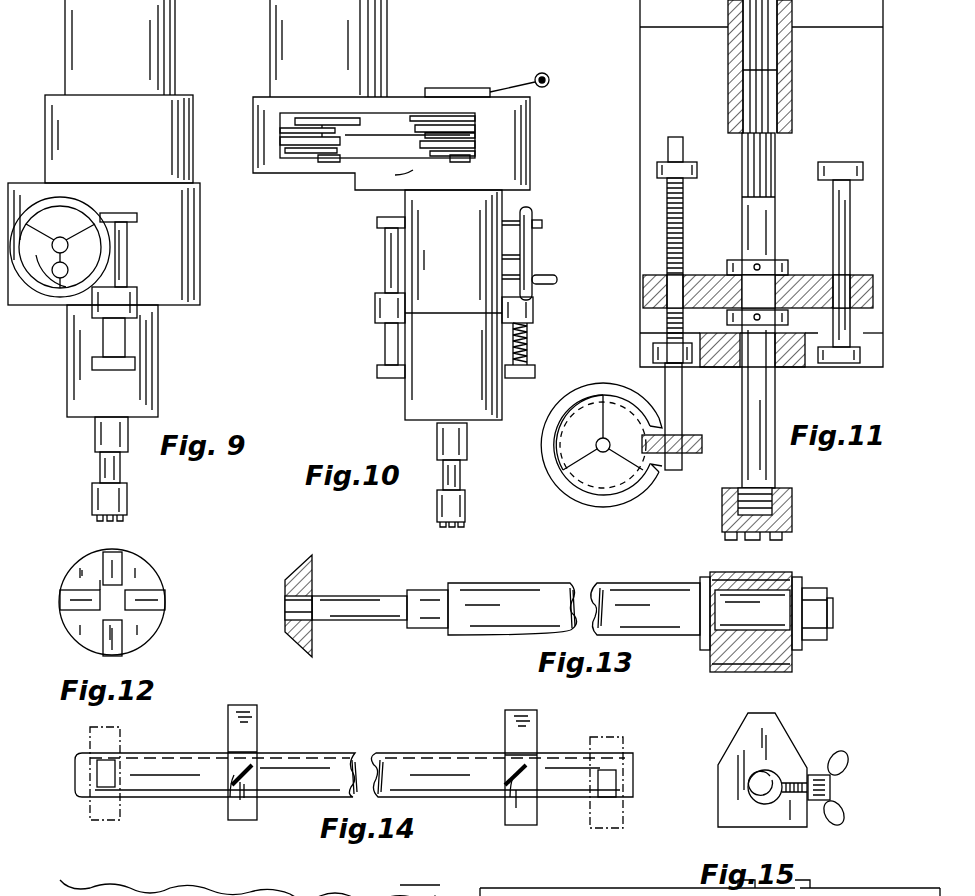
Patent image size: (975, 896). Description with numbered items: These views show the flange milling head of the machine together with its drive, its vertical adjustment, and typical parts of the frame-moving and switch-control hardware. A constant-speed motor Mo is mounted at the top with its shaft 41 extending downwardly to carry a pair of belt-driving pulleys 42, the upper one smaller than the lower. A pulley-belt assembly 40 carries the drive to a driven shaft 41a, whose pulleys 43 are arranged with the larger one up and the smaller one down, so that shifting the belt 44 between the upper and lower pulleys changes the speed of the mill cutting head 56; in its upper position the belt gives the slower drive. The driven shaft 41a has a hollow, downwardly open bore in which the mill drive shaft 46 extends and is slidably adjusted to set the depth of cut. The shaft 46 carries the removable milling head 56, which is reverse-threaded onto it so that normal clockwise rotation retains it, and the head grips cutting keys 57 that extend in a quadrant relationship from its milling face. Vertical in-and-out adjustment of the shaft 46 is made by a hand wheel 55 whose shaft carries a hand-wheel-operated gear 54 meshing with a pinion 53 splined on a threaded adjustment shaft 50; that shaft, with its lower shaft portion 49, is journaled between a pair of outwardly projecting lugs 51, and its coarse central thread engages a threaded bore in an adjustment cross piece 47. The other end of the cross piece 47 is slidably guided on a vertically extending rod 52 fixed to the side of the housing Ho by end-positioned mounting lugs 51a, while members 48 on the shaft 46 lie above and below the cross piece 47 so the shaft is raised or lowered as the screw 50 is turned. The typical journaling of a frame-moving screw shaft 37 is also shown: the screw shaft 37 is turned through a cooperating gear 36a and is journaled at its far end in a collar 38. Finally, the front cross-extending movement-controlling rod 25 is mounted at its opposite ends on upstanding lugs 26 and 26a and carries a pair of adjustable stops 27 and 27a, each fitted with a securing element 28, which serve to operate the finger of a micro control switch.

In FIG. 9, the milling head motor Mo is at (175, 50).
In FIG. 10, the milling head motor Mo is at (387, 49).
In FIG. 9, the housing Ho is at (200, 237).
In FIG. 10, the housing Ho is at (530, 175).
In FIG. 14, the movement-controlling rod 25 is at (416, 751).
In FIG. 15, the movement-controlling rod 25 is at (744, 782).
In FIG. 14, the upstanding ear or lug 26 is at (112, 816).
In FIG. 14, the upstanding ear or lug 26a is at (631, 842).
In FIG. 14, the adjustable stop 27 is at (255, 733).
In FIG. 14, the adjustable stop 27a is at (505, 726).
In FIG. 15, the adjustable stop 27a is at (790, 728).
In FIG. 14, the set screw / wing nut 28 is at (232, 786).
In FIG. 15, the set screw / wing nut 28 is at (840, 770).
In FIG. 13, the cooperating gear 36a is at (315, 575).
In FIG. 13, the screw shaft 37 is at (521, 588).
In FIG. 13, the collar 38 is at (720, 572).
In FIG. 10, the pulley-belt assembly 40 is at (286, 150).
In FIG. 10, the motor shaft 41 is at (328, 162).
In FIG. 10, the driven shaft 41a is at (457, 163).
In FIG. 11, the driven shaft 41a is at (790, 98).
In FIG. 10, the belt-driving pulleys 42 is at (295, 121).
In FIG. 10, the slide bar 43 is at (455, 136).
In FIG. 10, the belt 44 is at (402, 120).
In FIG. 9, the mill drive shaft 46 is at (98, 464).
In FIG. 10, the mill drive shaft 46 is at (460, 471).
In FIG. 11, the mill drive shaft 46 is at (775, 212).
In FIG. 9, the adjustment cross piece 47 is at (137, 315).
In FIG. 10, the adjustment cross piece 47 is at (375, 313).
In FIG. 11, the adjustment cross piece 47 is at (643, 290).
In FIG. 11, the collar 48 is at (730, 260).
In FIG. 11, the shaft 49 is at (738, 366).
In FIG. 10, the threaded adjustment shaft 50 is at (527, 347).
In FIG. 11, the threaded adjustment shaft 50 is at (667, 208).
In FIG. 9, the ears or lugs 51 is at (134, 221).
In FIG. 10, the ears or lugs 51 is at (377, 222).
In FIG. 11, the ears or lugs 51 is at (646, 170).
In FIG. 11, the mounting ears or lugs 51a is at (841, 162).
In FIG. 9, the vertically extending rod 52 is at (127, 270).
In FIG. 10, the vertically extending rod 52 is at (385, 260).
In FIG. 11, the vertically extending rod 52 is at (833, 238).
In FIG. 11, the pinion 53 is at (688, 438).
In FIG. 10, the hand wheel operated gear 54 is at (560, 445).
In FIG. 9, the hand wheel 55 is at (52, 290).
In FIG. 10, the hand wheel 55 is at (537, 247).
In FIG. 9, the milling head 56 is at (92, 500).
In FIG. 10, the milling head 56 is at (465, 506).
In FIG. 11, the milling head 56 is at (792, 505).
In FIG. 12, the milling head 56 is at (150, 577).
In FIG. 9, the cutting keys 57 is at (118, 524).
In FIG. 10, the cutting keys 57 is at (448, 528).
In FIG. 11, the cutting keys 57 is at (762, 540).
In FIG. 12, the cutting keys 57 is at (130, 642).